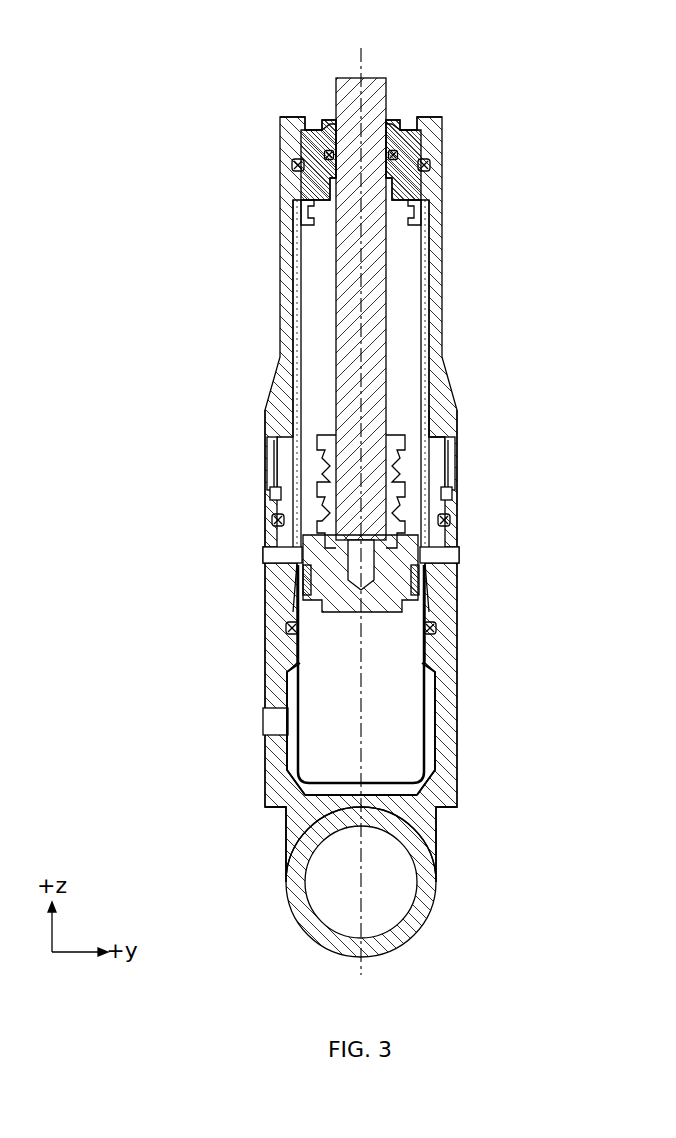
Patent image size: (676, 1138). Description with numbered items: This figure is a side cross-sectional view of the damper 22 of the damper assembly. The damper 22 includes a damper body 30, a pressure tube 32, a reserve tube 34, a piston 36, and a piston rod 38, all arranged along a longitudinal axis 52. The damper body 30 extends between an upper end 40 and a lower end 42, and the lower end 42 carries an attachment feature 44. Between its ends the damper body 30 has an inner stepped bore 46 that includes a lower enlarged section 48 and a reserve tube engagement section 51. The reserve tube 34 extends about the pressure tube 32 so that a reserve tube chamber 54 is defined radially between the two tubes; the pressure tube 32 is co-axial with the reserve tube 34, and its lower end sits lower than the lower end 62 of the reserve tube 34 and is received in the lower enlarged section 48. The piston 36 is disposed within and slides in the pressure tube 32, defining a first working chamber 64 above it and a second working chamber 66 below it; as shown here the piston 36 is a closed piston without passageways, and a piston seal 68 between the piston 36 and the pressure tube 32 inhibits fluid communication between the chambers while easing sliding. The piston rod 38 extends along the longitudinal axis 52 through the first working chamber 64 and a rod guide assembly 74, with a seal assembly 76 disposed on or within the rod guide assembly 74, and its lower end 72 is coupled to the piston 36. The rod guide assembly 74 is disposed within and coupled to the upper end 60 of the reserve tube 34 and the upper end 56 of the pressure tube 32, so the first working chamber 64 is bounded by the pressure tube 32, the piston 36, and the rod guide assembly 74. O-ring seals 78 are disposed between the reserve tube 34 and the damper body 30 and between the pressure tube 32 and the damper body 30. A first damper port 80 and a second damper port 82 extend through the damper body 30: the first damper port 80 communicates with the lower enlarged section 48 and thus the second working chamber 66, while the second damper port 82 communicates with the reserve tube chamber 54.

The damper 22 is at (183, 403).
The damper body 30 is at (270, 688).
The pressure tube 32 is at (426, 262).
The reserve tube 34 is at (437, 300).
The piston 36 is at (378, 600).
The piston rod 38 is at (350, 77).
The upper end 40 is at (264, 441).
The lower end 42 is at (264, 810).
The attachment feature 44 is at (428, 876).
The inner stepped bore 46 is at (267, 497).
The lower enlarged section 48 is at (297, 746).
The reserve tube engagement section 51 is at (275, 472).
The longitudinal axis 52 is at (364, 50).
The reserve tube chamber 54 is at (426, 420).
The upper end 56 is at (297, 205).
The upper end 60 is at (290, 118).
The lower end 62 is at (283, 540).
The first working chamber 64 is at (309, 335).
The second working chamber 66 is at (317, 721).
The piston seal 68 is at (300, 582).
The lower end 72 is at (372, 565).
The rod guide assembly 74 is at (312, 148).
The seal assembly 76 is at (388, 124).
The O-ring seals 78 is at (447, 519).
The first damper port 80 is at (268, 558).
The second damper port 82 is at (270, 728).